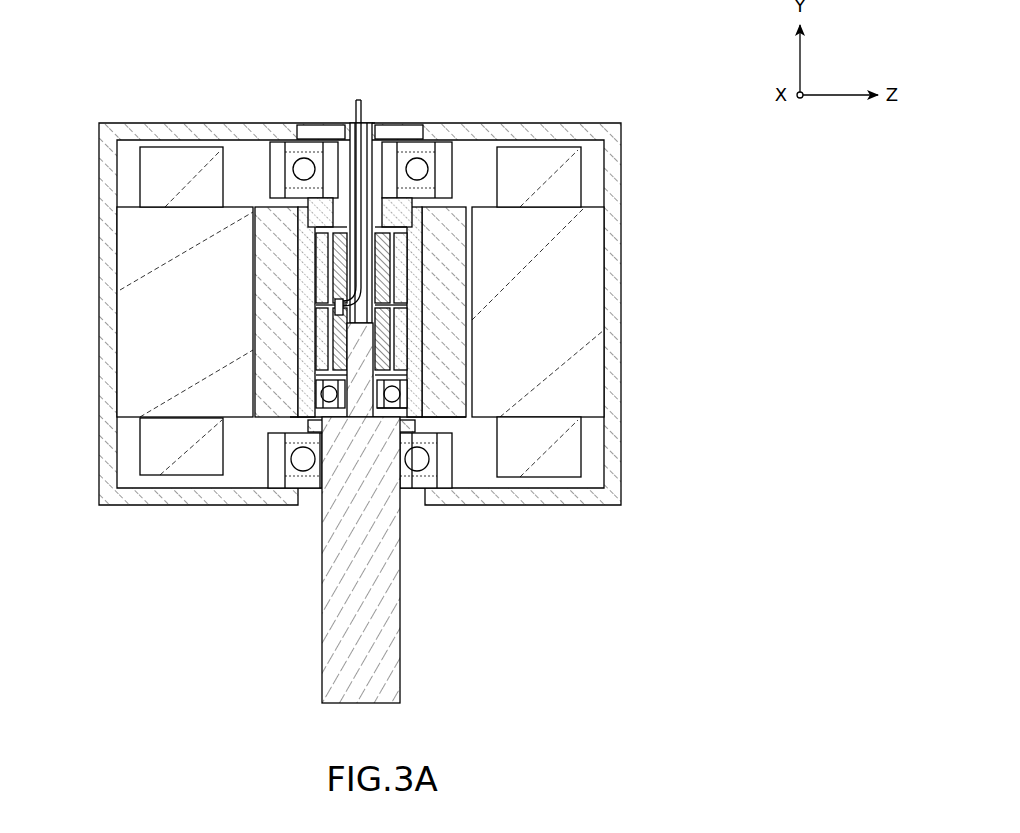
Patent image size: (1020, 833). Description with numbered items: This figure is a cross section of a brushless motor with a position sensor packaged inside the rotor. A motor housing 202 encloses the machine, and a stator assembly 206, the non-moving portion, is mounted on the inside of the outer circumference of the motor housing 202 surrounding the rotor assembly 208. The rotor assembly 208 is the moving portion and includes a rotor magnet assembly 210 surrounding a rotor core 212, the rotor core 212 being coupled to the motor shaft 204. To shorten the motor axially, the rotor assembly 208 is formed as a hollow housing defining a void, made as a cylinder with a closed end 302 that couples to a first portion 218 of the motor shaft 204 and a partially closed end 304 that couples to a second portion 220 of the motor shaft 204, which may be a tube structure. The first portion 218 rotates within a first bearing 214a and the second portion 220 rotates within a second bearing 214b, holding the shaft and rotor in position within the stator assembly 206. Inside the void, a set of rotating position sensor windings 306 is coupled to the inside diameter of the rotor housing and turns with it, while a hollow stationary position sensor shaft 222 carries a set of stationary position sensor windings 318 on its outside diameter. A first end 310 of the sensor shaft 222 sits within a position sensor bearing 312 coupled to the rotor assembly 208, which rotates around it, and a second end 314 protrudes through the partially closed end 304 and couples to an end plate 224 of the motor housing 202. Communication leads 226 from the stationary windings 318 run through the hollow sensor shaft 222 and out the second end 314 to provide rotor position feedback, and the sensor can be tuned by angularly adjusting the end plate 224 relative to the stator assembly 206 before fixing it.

The motor housing 202 is at (617, 190).
The motor shaft 204 is at (332, 143).
The stator assembly 206 is at (152, 358).
The rotor assembly 208 is at (250, 235).
The rotor magnet assembly 210 is at (272, 383).
The rotor core 212 is at (308, 262).
The first bearing 214a is at (313, 482).
The second bearing 214b is at (312, 152).
The first portion of motor shaft 218 is at (319, 646).
The second portion of motor shaft 220 is at (405, 139).
The hollow stationary position sensor shaft 222 is at (358, 387).
The end plate of motor housing 224 is at (330, 132).
The communication leads 226 is at (363, 125).
The closed end 302 is at (348, 425).
The partially closed end 304 is at (307, 210).
The rotating position sensor windings 306 is at (320, 343).
The first end of hollow stationary position sensor shaft 310 is at (383, 411).
The position sensor bearing 312 is at (402, 403).
The second end of hollow stationary position sensor shaft 314 is at (378, 121).
The stationary position sensor windings 318 is at (380, 272).